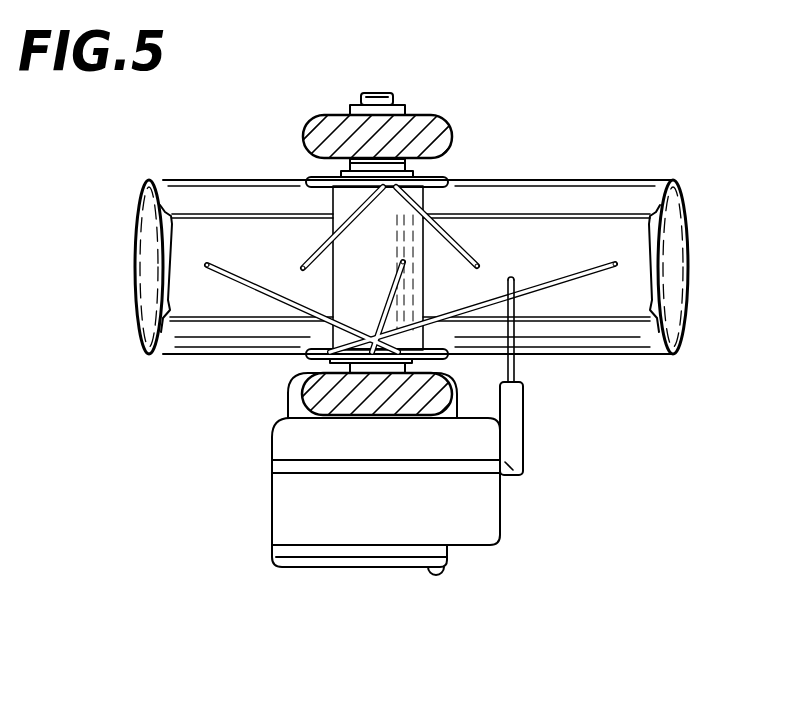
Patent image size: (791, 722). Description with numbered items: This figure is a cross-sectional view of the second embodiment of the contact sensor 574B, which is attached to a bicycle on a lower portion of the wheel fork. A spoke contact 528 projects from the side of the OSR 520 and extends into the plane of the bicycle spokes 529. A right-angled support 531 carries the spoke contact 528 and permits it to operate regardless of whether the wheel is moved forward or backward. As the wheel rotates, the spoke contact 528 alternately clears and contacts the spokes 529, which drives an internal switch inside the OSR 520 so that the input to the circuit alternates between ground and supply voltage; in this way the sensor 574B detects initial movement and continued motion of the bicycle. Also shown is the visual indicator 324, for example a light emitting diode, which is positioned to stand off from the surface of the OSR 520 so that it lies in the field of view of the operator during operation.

The bicycle spokes 529 is at (474, 258).
The spoke contact 528 is at (516, 370).
The right-angled support 531 is at (511, 464).
The sensor 574B is at (565, 436).
The OSR 520 is at (486, 574).
The visual indicator 324 is at (427, 575).